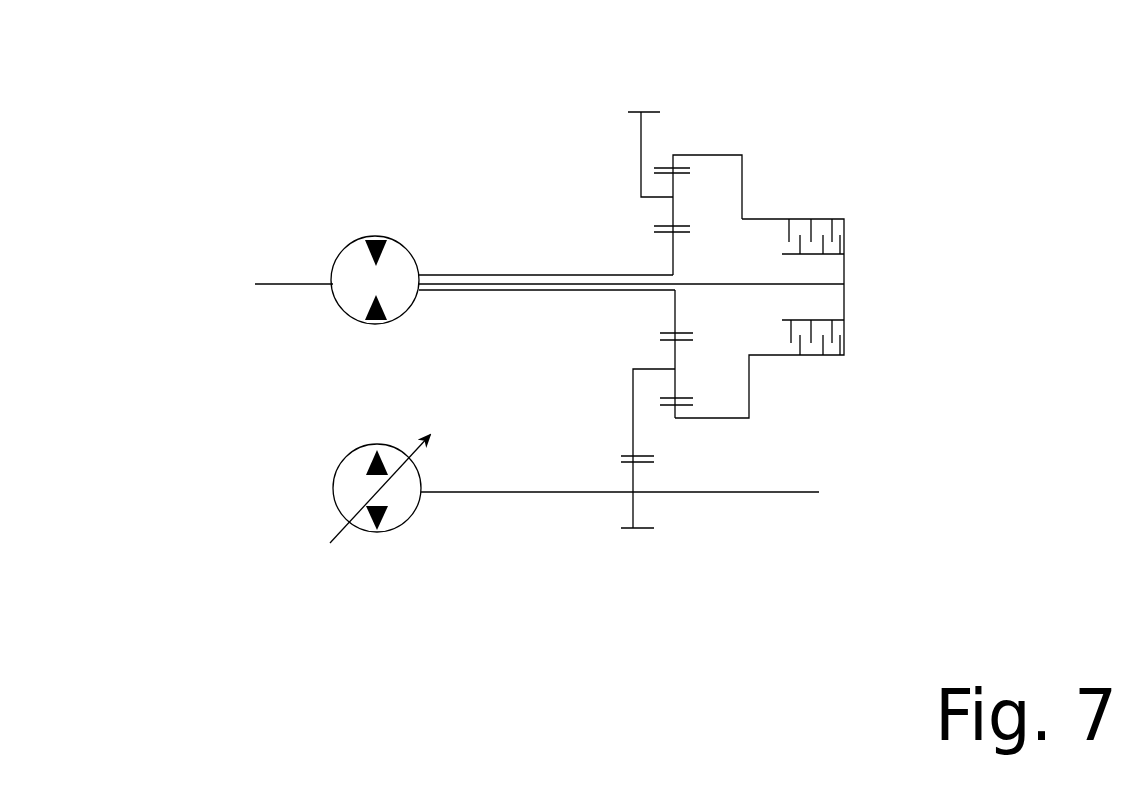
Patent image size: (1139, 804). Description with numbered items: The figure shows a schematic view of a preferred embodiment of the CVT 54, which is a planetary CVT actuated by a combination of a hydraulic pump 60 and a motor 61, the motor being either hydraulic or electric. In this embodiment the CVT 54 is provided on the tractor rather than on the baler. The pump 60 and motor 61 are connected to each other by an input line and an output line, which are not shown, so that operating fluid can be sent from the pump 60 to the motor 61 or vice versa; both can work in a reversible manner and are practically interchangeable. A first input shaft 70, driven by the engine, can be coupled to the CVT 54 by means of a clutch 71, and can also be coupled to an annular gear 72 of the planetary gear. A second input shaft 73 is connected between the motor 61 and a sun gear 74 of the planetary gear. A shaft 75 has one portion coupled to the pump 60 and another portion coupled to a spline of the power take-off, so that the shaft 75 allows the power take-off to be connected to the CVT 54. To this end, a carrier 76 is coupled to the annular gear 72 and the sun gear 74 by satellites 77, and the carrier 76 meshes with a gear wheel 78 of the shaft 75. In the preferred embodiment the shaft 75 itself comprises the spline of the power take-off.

The CVT 54 is at (822, 450).
The hydraulic pump 60 is at (416, 247).
The motor 61 is at (333, 486).
The first input shaft 70 is at (278, 284).
The clutch 71 is at (817, 221).
The annular gear 72 is at (698, 158).
The second input shaft 73 is at (505, 276).
The sun gear 74 is at (672, 306).
The shaft 75 is at (705, 493).
The carrier 76 is at (633, 383).
The satellites 77 is at (675, 386).
The gear wheel 78 is at (632, 516).